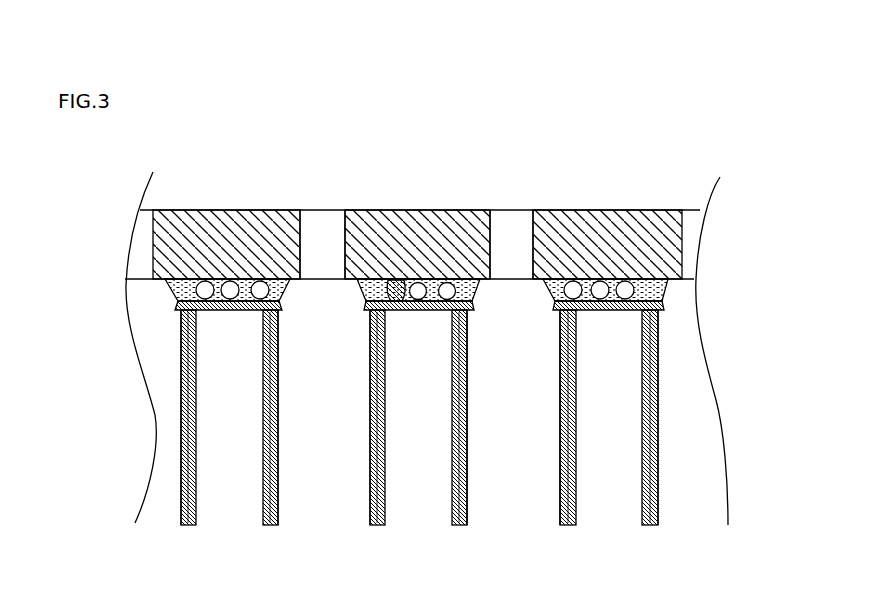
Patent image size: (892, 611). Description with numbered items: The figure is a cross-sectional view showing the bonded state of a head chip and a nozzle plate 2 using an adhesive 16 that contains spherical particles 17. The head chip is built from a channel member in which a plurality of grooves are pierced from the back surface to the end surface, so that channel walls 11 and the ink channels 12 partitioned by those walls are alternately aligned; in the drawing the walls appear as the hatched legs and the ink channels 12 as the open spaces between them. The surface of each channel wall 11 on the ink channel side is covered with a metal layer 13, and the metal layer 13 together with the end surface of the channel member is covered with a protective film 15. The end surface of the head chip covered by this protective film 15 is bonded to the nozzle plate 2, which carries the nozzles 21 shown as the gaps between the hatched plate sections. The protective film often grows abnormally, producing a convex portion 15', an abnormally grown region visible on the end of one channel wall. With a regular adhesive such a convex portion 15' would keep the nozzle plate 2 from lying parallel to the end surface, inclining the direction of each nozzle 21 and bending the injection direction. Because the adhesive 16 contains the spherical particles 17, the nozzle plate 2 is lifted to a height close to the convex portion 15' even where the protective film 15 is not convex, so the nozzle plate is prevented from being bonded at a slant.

The nozzle plate 2 is at (580, 243).
The nozzle 21 is at (507, 231).
The channel wall 11 is at (633, 435).
The ink channel 12 is at (512, 502).
The metal layer 13 is at (658, 388).
The protective film 15 is at (456, 413).
The convex portion of the protective film 15' is at (400, 235).
The adhesive 16 is at (667, 300).
The spherical particles 17 is at (447, 290).